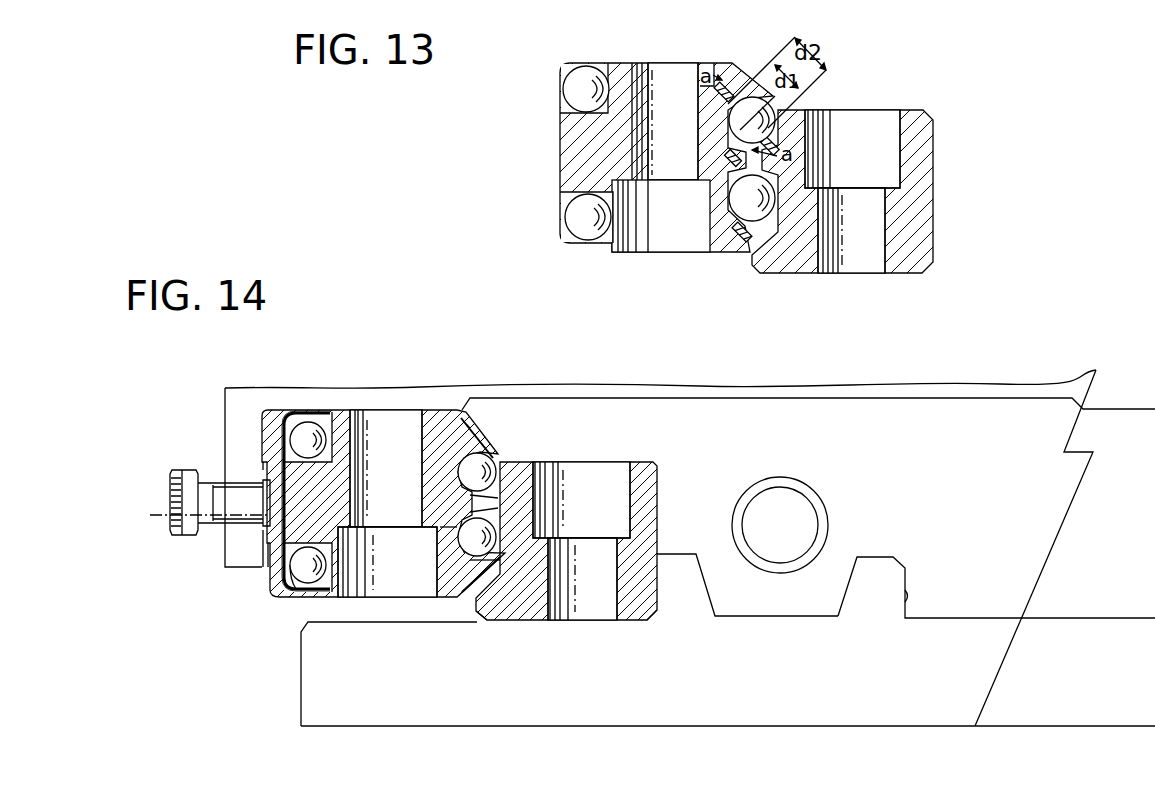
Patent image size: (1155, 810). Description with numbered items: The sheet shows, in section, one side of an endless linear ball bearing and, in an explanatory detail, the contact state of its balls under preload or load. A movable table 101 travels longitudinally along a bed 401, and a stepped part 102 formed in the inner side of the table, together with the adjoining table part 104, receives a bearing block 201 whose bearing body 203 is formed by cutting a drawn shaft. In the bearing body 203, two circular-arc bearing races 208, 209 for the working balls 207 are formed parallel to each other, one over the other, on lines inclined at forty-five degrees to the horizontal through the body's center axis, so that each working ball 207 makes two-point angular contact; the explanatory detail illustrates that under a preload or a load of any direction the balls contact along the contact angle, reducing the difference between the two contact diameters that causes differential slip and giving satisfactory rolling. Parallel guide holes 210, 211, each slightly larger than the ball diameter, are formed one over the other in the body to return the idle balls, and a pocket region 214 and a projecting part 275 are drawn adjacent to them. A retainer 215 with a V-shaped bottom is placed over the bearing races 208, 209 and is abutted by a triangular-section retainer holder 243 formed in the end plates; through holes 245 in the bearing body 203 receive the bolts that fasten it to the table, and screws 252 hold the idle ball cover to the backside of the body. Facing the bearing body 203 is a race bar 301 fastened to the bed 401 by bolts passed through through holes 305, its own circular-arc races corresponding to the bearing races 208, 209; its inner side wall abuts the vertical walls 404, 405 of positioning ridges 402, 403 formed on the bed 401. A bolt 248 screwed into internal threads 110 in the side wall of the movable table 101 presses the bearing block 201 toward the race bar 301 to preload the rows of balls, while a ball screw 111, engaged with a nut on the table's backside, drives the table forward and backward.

In FIG. 14, the movable table 101 is at (242, 396).
In FIG. 14, the stepped part 102 is at (262, 432).
In FIG. 14, the top cover 104 is at (848, 396).
In FIG. 14, the internal thread 110 is at (258, 472).
In FIG. 14, the ball screw 111 is at (782, 574).
In FIG. 14, the bearing block 201 is at (284, 592).
In FIG. 13, the bearing body 203 is at (668, 76).
In FIG. 14, the bearing body 203 is at (396, 410).
In FIG. 13, the working ball 207 is at (578, 90).
In FIG. 14, the working ball 207 is at (310, 432).
In FIG. 13, the bearing race 208 is at (728, 92).
In FIG. 14, the bearing race 208 is at (456, 416).
In FIG. 13, the bearing race 209 is at (742, 226).
In FIG. 14, the bearing race 209 is at (476, 575).
In FIG. 13, the guide hole 210 is at (602, 112).
In FIG. 14, the guide hole 210 is at (332, 413).
In FIG. 13, the guide hole 211 is at (600, 235).
In FIG. 14, the guide hole 211 is at (318, 593).
In FIG. 14, the ball pocket 214 is at (300, 414).
In FIG. 14, the retainer 215 is at (500, 440).
In FIG. 14, the retainer holder 243 is at (498, 490).
In FIG. 14, the through hole 245 is at (344, 586).
In FIG. 14, the bolt 248 is at (170, 492).
In FIG. 14, the screw 252 is at (265, 512).
In FIG. 14, the projection 275 is at (450, 528).
In FIG. 13, the race bar 301 is at (912, 122).
In FIG. 14, the race bar 301 is at (656, 476).
In FIG. 14, the through hole 305 is at (612, 598).
In FIG. 14, the bed 401 is at (796, 728).
In FIG. 14, the positioning ridge 402 is at (870, 562).
In FIG. 14, the positioning ridge 403 is at (718, 604).
In FIG. 14, the vertical wall 404 is at (904, 592).
In FIG. 14, the vertical wall 405 is at (652, 618).